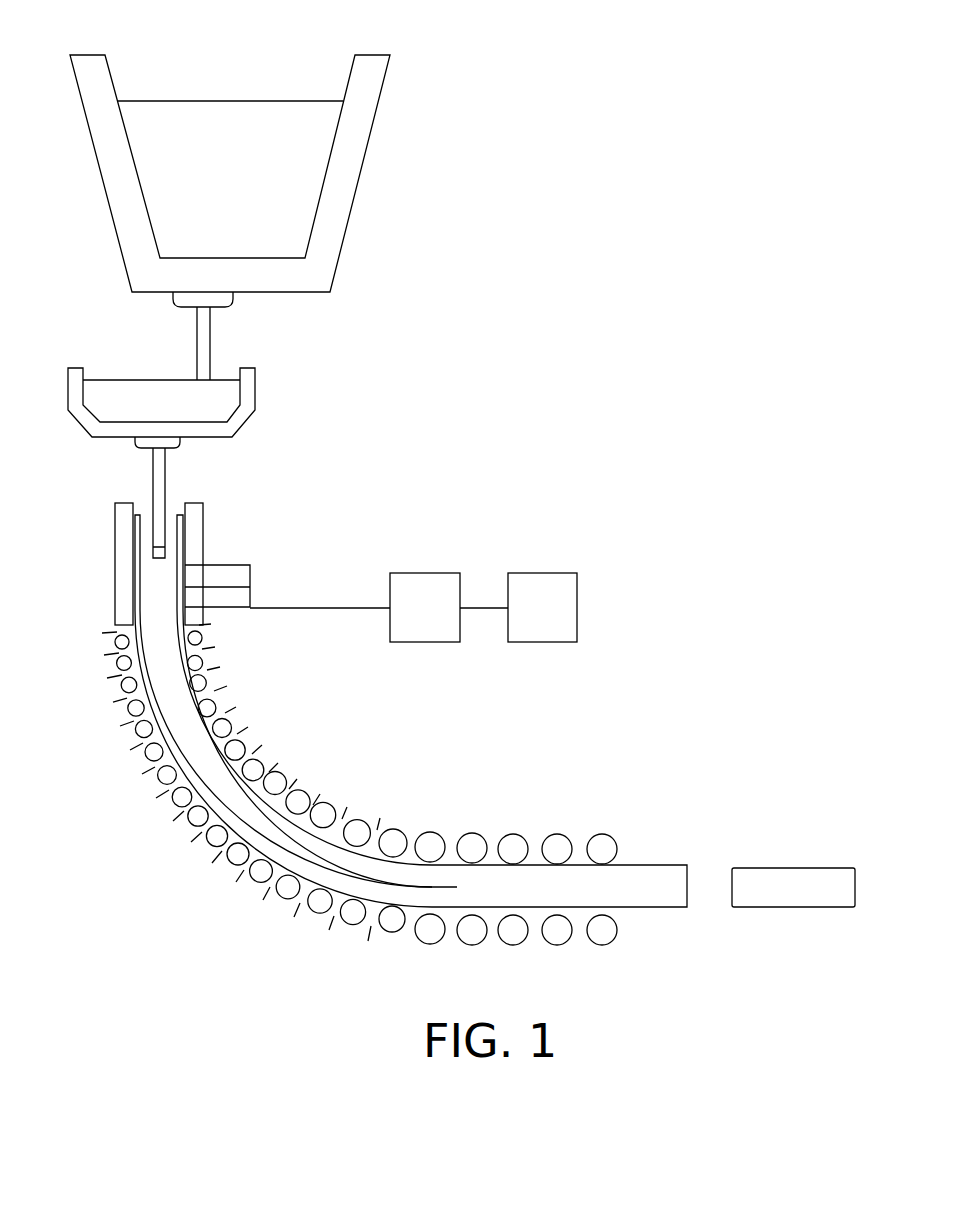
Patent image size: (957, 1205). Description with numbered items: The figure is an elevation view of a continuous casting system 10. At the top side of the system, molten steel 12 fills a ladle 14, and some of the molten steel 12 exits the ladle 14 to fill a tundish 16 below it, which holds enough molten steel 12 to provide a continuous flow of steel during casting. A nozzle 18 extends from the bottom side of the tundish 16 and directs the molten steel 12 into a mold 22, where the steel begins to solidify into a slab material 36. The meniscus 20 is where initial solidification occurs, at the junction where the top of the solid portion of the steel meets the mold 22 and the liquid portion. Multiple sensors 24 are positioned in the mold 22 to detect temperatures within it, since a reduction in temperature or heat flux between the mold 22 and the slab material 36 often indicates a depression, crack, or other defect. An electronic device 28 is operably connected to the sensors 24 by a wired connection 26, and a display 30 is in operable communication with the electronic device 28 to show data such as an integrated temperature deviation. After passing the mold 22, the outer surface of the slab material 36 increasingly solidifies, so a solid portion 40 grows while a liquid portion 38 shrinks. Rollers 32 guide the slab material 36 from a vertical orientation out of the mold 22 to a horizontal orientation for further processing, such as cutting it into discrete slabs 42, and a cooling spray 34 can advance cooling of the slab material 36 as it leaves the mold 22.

The continuous casting system 10 is at (702, 152).
The molten steel 12 is at (227, 117).
The ladle 14 is at (355, 158).
The tundish 16 is at (250, 397).
The nozzle 18 is at (160, 475).
The meniscus 20 is at (178, 503).
The mold 22 is at (193, 542).
The sensors 24 is at (193, 612).
The wired connection 26 is at (307, 608).
The electronic device 28 is at (423, 587).
The display 30 is at (538, 587).
The rollers 32 is at (177, 802).
The cooling spray 34 is at (190, 842).
The slab material 36 is at (252, 850).
The liquid portion 38 is at (278, 838).
The solid portion 40 is at (317, 873).
The discrete slabs 42 is at (788, 883).